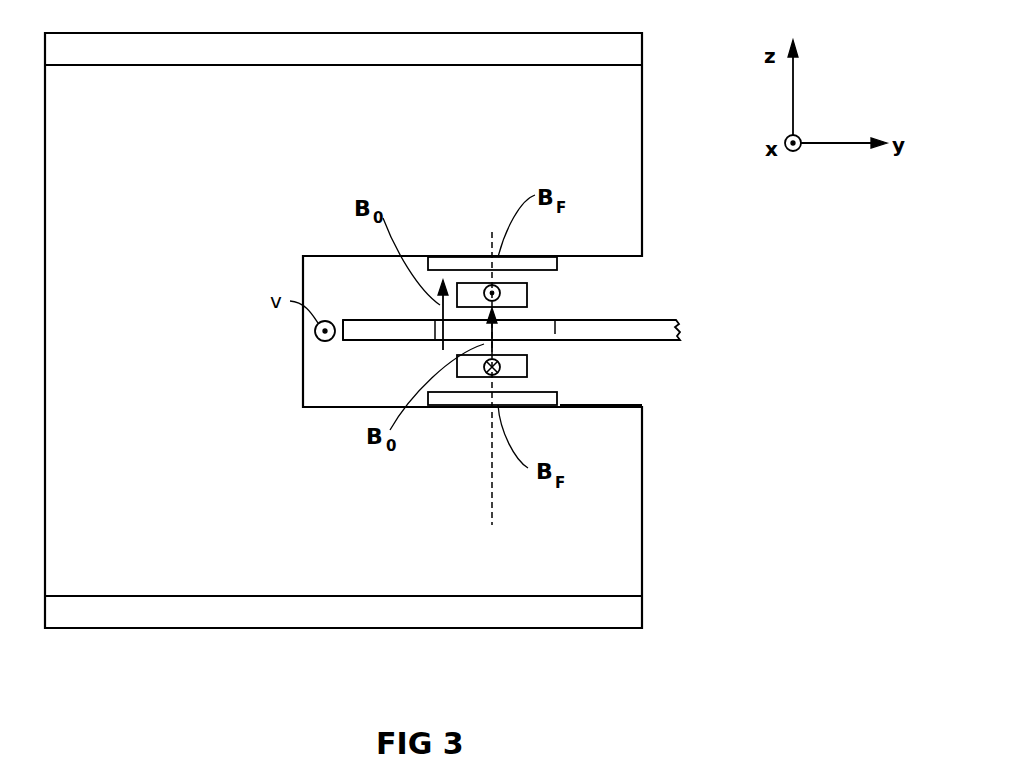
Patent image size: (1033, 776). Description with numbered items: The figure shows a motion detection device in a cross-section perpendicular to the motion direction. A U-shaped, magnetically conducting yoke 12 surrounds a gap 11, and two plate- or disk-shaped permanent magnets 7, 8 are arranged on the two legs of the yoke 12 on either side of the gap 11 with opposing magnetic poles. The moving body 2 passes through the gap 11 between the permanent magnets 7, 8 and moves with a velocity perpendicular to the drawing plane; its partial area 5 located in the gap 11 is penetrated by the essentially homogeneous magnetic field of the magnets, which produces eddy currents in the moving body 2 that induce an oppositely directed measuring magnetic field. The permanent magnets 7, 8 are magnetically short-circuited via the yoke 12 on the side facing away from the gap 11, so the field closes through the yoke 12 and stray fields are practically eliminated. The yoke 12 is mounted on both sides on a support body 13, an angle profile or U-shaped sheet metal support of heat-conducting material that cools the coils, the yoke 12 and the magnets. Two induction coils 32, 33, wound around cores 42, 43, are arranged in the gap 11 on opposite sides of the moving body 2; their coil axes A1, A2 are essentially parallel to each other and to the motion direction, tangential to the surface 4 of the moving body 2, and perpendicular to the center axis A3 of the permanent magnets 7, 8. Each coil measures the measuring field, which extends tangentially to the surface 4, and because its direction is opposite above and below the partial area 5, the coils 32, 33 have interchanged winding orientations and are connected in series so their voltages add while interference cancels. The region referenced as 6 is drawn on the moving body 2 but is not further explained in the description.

The moving body 2 is at (653, 330).
The surface 4 is at (628, 320).
The partial area 5 is at (432, 334).
The beam body 6 is at (598, 328).
The permanent magnet 7 is at (548, 257).
The permanent magnet 8 is at (548, 405).
The gap 11 is at (608, 382).
The yoke 12 is at (642, 162).
The support body 13 is at (642, 47).
The induction coil 32 is at (485, 289).
The induction coil 33 is at (484, 373).
The core 42 is at (468, 288).
The core 43 is at (470, 370).
The coil axis A1 is at (527, 296).
The coil axis A2 is at (527, 368).
The center axis A3 is at (493, 513).